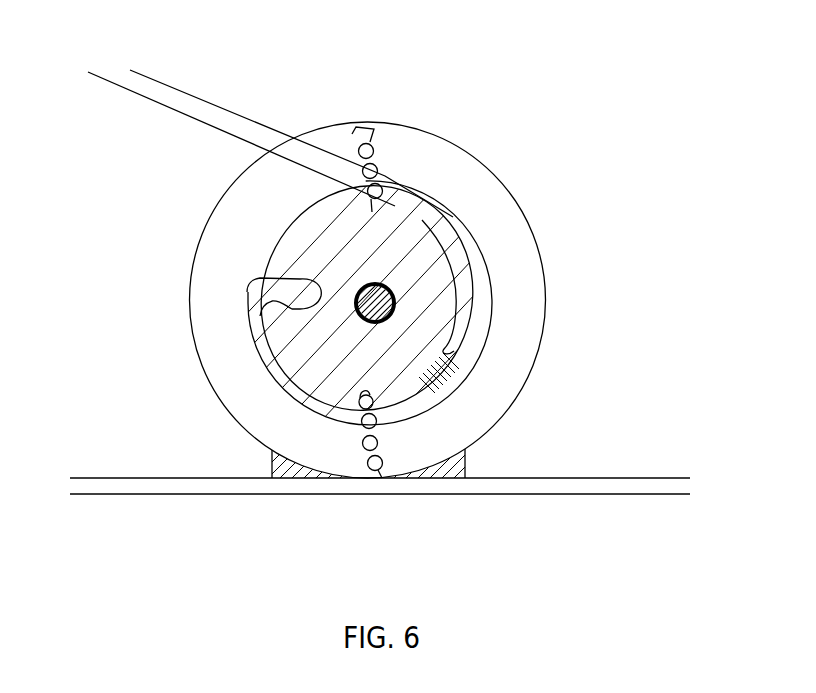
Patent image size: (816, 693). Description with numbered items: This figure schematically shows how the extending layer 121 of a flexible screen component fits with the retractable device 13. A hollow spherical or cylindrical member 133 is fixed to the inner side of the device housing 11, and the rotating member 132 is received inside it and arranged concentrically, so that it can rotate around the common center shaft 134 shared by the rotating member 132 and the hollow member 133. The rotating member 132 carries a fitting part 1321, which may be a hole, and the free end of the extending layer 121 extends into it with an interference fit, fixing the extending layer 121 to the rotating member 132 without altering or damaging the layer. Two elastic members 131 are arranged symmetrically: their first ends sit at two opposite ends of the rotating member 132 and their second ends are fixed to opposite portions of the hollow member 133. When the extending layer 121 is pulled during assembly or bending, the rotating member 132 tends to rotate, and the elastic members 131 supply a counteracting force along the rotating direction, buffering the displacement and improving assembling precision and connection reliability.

The device housing 11 is at (487, 493).
The retractable device 13 is at (114, 160).
The extending layer 121 is at (227, 133).
The elastic member 131 is at (372, 155).
The rotating member 132 is at (416, 311).
The fitting part 1321 is at (312, 276).
The hollow spherical or cylindrical member 133 is at (548, 293).
The common center shaft 134 is at (383, 287).